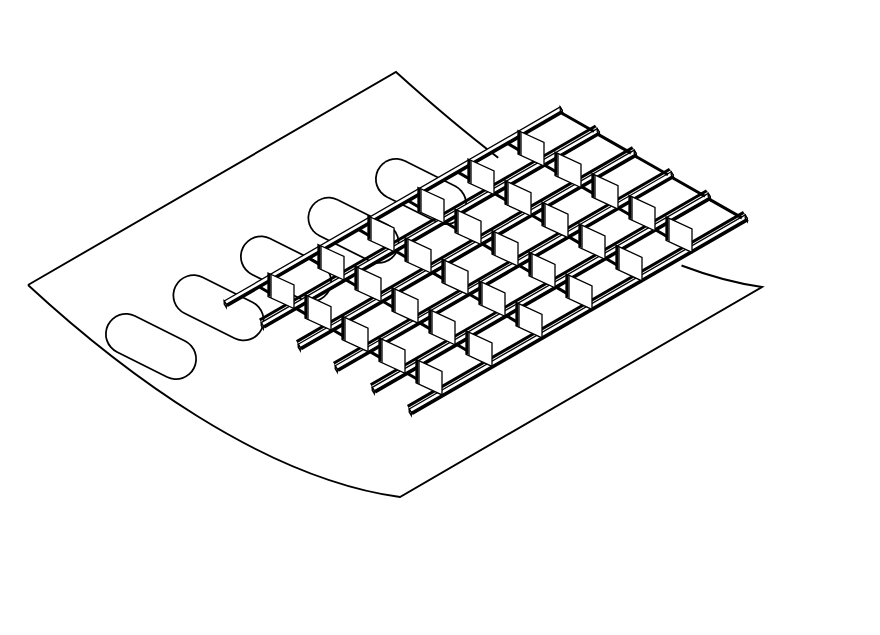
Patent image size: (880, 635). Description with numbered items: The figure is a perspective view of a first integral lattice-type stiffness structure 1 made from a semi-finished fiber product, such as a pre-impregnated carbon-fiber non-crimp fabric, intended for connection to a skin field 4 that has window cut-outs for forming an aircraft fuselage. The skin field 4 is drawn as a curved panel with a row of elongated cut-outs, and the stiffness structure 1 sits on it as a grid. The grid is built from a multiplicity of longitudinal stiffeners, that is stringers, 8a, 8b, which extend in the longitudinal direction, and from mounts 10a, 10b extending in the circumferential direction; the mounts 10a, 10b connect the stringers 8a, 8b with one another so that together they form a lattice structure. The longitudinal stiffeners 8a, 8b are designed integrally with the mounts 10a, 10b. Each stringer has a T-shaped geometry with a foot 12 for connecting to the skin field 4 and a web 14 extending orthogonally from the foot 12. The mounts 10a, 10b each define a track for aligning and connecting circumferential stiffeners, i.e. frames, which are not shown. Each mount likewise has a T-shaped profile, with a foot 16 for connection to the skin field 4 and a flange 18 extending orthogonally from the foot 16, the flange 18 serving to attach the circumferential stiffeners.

The integral lattice-type stiffness structure 1 is at (494, 46).
The skin field 4 is at (549, 406).
The longitudinal stiffener 8a is at (643, 152).
The longitudinal stiffener 8b is at (681, 177).
The mount 10a is at (680, 268).
The mount 10b is at (582, 297).
The foot 12 is at (720, 240).
The web 14 is at (738, 214).
The foot 16 is at (417, 383).
The flange 18 is at (422, 370).